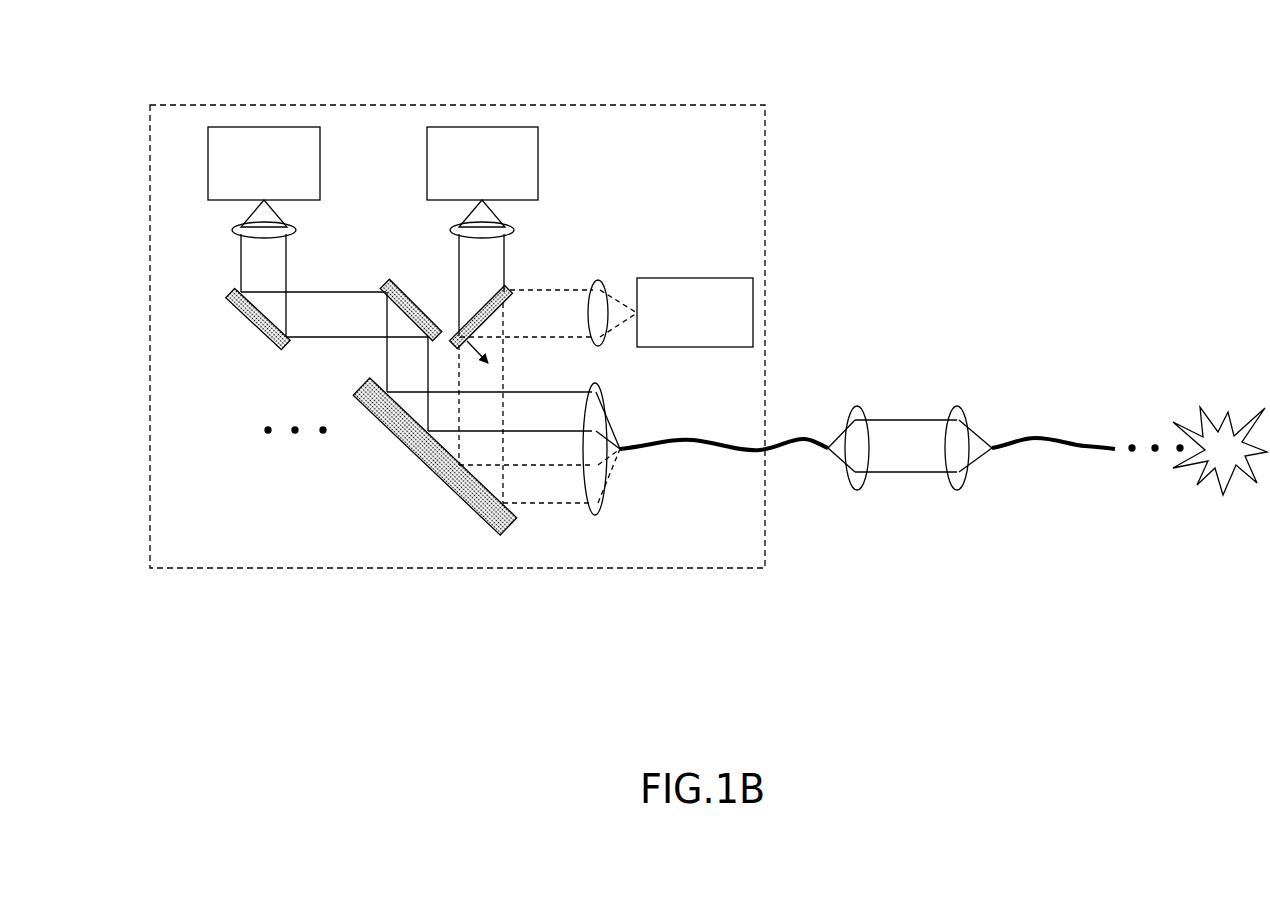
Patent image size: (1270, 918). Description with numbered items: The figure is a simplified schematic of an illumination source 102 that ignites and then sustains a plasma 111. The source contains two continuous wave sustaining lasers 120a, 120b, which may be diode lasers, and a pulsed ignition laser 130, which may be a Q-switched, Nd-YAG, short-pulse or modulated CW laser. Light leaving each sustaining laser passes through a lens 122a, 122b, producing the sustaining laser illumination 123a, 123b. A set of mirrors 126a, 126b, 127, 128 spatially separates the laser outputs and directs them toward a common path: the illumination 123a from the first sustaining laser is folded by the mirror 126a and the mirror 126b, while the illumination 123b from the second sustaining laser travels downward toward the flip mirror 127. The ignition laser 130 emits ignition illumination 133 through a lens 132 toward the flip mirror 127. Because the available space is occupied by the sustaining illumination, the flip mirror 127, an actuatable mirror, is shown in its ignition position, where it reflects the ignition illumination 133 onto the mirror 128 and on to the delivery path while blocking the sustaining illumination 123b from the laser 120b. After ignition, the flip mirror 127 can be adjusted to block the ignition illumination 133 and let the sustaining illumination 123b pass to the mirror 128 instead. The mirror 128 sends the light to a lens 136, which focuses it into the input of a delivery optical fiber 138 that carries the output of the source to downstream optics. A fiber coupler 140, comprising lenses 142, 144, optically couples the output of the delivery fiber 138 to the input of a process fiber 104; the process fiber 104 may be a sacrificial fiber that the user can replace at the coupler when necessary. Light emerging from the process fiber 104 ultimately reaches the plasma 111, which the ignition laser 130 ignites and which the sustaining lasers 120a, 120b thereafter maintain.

The illumination source 102 is at (180, 62).
The sustaining laser 120a is at (288, 174).
The sustaining laser 120b is at (505, 174).
The lens 122a is at (236, 230).
The lens 122b is at (512, 230).
The sustaining laser illumination 123a is at (352, 333).
The sustaining laser illumination 123b is at (472, 277).
The mirror 126a is at (255, 323).
The mirror 126b is at (388, 285).
The flip mirror 127 is at (510, 290).
The mirror 128 is at (423, 462).
The ignition laser 130 is at (712, 324).
The lens 132 is at (601, 347).
The ignition illumination 133 is at (527, 324).
The lens 136 is at (600, 515).
The delivery optical fiber 138 is at (692, 440).
The fiber coupler 140 is at (925, 457).
The lens 142 is at (852, 407).
The lens 144 is at (955, 407).
The process fiber 104 is at (1058, 438).
The plasma 111 is at (1206, 480).